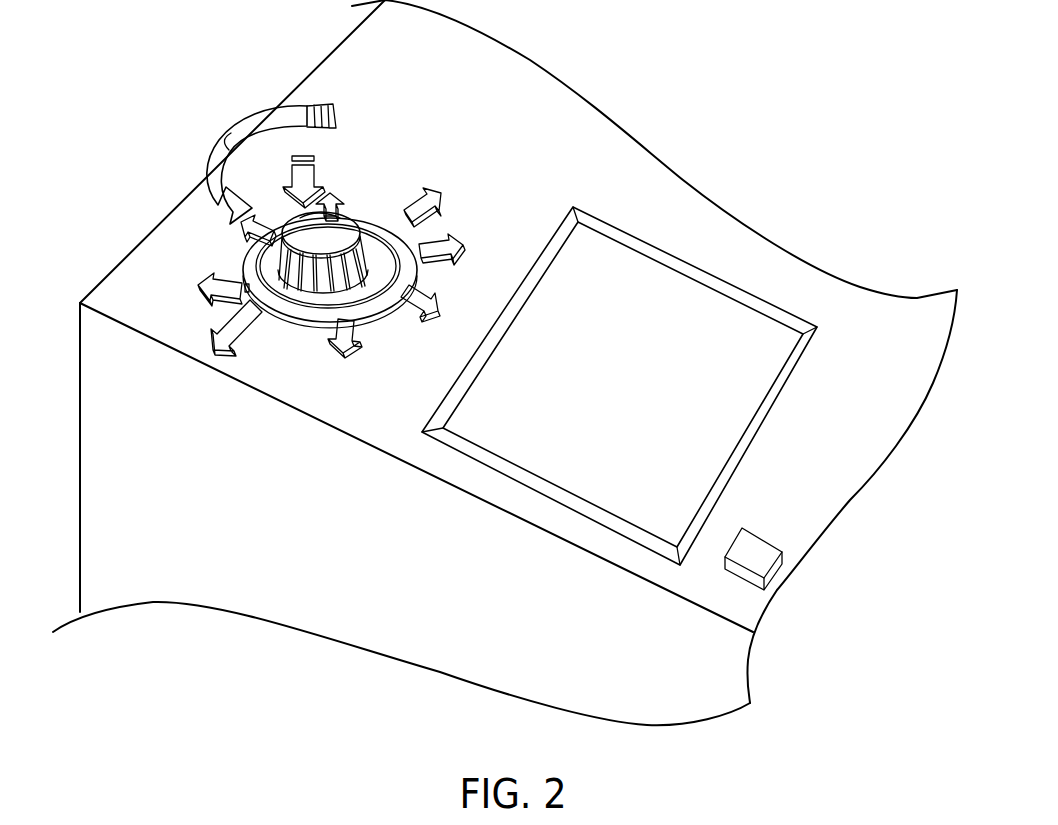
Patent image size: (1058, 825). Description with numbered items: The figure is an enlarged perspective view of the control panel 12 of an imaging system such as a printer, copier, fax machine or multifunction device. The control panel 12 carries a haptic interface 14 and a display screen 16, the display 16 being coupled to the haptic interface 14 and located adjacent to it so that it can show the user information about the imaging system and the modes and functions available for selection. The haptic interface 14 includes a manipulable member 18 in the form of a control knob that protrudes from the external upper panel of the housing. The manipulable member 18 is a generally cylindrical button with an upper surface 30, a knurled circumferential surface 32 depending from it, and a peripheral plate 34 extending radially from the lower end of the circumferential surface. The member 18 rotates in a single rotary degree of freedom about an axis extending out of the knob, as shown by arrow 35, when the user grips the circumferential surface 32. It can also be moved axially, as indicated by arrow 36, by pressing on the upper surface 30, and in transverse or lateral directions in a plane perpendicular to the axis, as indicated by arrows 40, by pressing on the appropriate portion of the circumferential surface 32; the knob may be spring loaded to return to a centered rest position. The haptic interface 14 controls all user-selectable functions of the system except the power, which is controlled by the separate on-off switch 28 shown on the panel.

The control panel 12 is at (137, 248).
The haptic interface 14 is at (233, 94).
The display screen 16 is at (637, 258).
The manipulable member 18 is at (340, 227).
The on-off switch 28 is at (758, 535).
The upper surface 30 is at (300, 215).
The knurled circumferential surface 32 is at (307, 279).
The peripheral plate 34 is at (357, 295).
The arrow 35 is at (226, 138).
The arrow 36 is at (318, 178).
The arrows 40 is at (440, 202).